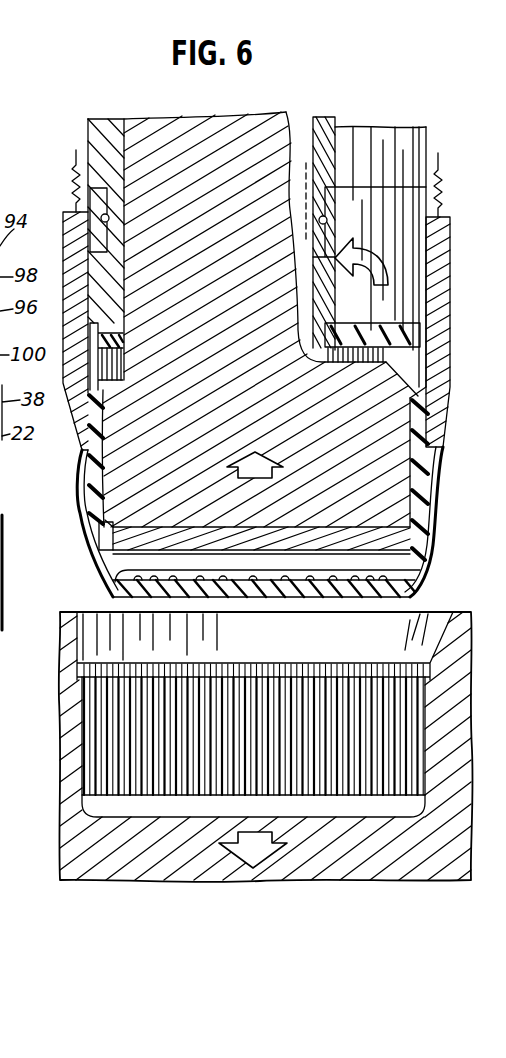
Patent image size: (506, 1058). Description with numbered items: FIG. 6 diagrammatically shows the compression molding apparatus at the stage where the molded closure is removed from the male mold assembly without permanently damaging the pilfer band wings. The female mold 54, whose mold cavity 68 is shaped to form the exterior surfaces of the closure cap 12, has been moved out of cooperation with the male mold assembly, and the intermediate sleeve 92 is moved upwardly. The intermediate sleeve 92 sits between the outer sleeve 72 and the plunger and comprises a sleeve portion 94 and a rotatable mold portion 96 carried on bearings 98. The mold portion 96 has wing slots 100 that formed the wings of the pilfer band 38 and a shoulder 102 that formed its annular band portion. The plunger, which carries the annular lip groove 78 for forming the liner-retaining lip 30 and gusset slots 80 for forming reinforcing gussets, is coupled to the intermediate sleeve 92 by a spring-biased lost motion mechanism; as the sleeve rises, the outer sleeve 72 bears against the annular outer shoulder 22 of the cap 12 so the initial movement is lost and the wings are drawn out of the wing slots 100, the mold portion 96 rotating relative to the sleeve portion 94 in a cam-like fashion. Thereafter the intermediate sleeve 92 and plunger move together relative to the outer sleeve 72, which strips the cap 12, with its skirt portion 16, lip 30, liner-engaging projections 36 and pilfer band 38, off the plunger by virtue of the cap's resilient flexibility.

The closure cap 12 is at (434, 552).
The skirt portion 16 is at (88, 510).
The annular outer shoulder 22 is at (82, 448).
The liner-retaining annular lip 30 is at (211, 566).
The liner-engaging projections 36 is at (173, 575).
The pilfer band 38 is at (448, 400).
The female mold 54 is at (362, 880).
The mold cavity 68 is at (390, 639).
The outer sleeve 72 is at (64, 227).
The annular lip groove 78 is at (127, 517).
The gusset slots 80 is at (108, 524).
The intermediate sleeve 92 is at (105, 119).
The sleeve portion 94 is at (125, 153).
The rotatable mold portion 96 is at (132, 292).
The bearings 98 is at (124, 222).
The wing slots 100 is at (363, 358).
The shoulder 102 is at (354, 325).